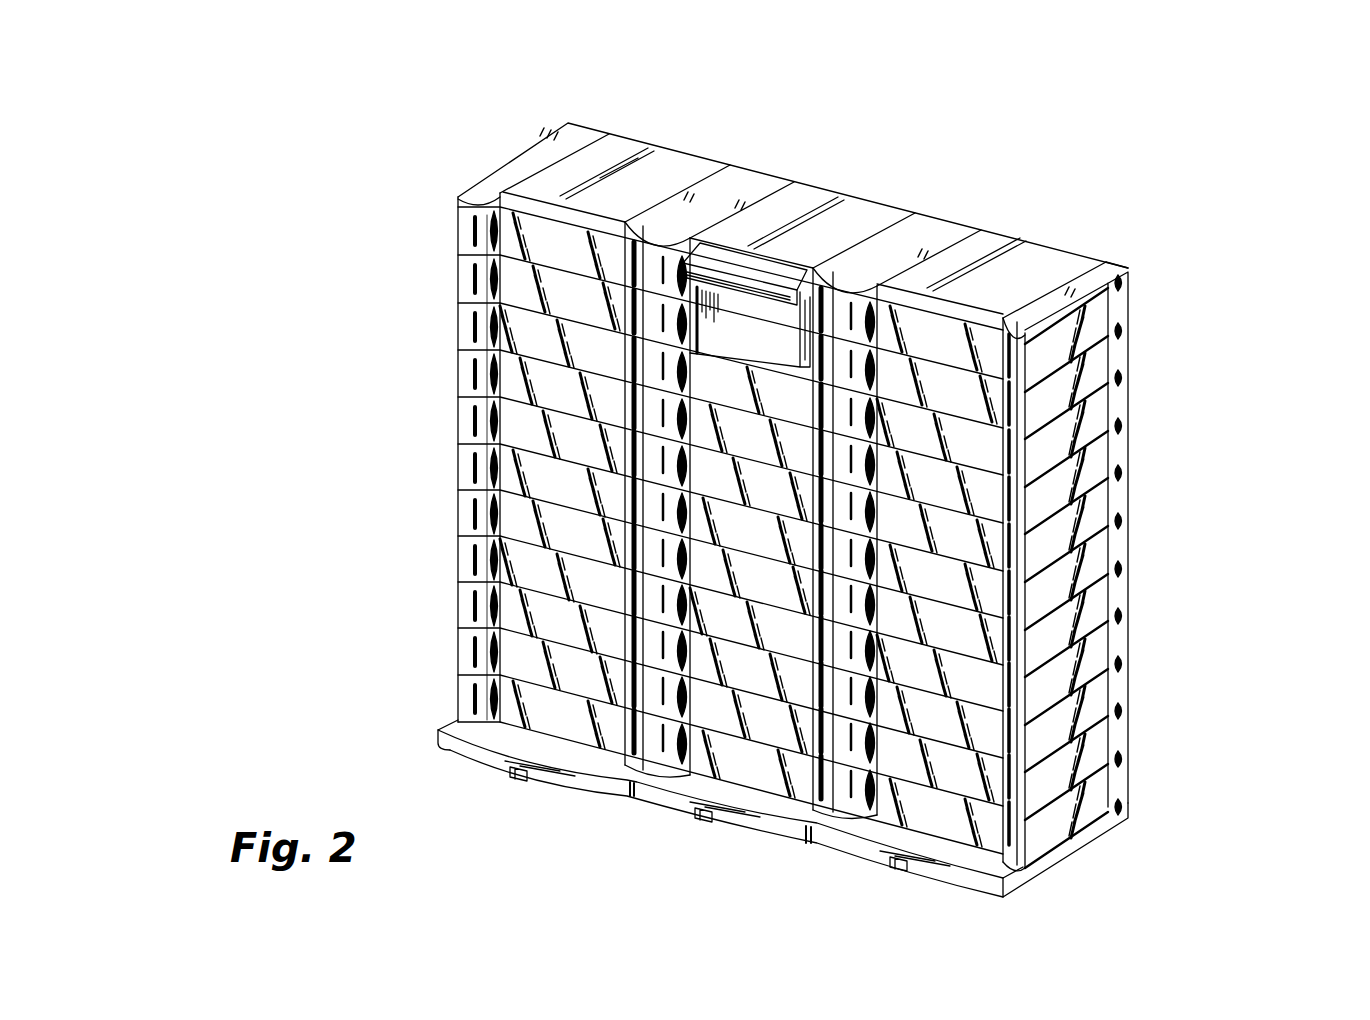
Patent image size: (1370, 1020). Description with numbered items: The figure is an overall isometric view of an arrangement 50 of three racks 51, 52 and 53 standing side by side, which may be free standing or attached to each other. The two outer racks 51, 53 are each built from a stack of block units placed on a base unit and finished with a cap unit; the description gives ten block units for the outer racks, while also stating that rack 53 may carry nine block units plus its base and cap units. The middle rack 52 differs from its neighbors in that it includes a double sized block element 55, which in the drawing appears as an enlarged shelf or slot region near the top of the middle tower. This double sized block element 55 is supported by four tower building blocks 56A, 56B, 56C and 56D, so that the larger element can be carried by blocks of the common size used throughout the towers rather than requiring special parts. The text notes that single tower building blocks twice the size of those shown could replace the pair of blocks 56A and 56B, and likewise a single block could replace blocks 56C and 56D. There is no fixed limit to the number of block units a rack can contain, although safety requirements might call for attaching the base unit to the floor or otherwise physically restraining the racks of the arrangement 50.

The arrangement 50 is at (1185, 569).
The rack 51 is at (630, 238).
The rack 52 is at (813, 277).
The rack 53 is at (1055, 258).
The double sized block element 55 is at (737, 322).
The tower building block 56A is at (682, 288).
The tower building block 56B is at (700, 303).
The tower building block 56C is at (830, 280).
The tower building block 56D is at (827, 358).